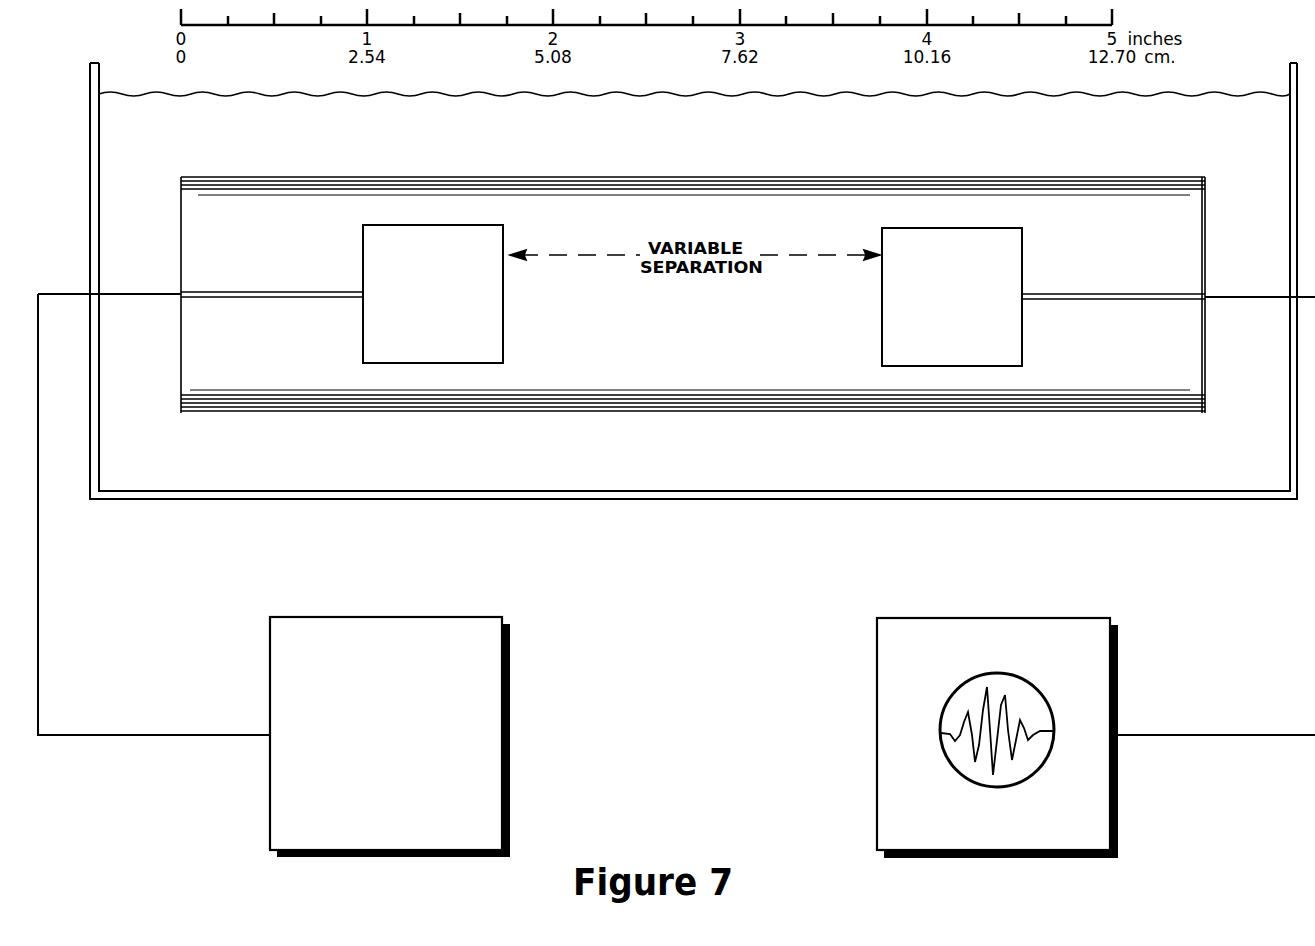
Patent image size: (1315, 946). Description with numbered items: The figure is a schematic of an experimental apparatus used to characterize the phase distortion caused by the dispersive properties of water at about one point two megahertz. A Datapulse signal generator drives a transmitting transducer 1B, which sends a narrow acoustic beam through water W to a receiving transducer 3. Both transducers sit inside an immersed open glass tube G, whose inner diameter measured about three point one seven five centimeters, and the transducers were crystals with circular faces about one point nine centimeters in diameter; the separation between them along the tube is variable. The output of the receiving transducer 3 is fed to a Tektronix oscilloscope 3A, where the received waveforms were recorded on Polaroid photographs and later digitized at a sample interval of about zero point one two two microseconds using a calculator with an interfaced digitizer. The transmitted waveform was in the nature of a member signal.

The water W is at (143, 93).
The glass tube G is at (181, 187).
The transmitting transducer 1B is at (363, 234).
The receiving transducer 3 is at (1022, 238).
The oscilloscope 3A is at (1118, 632).